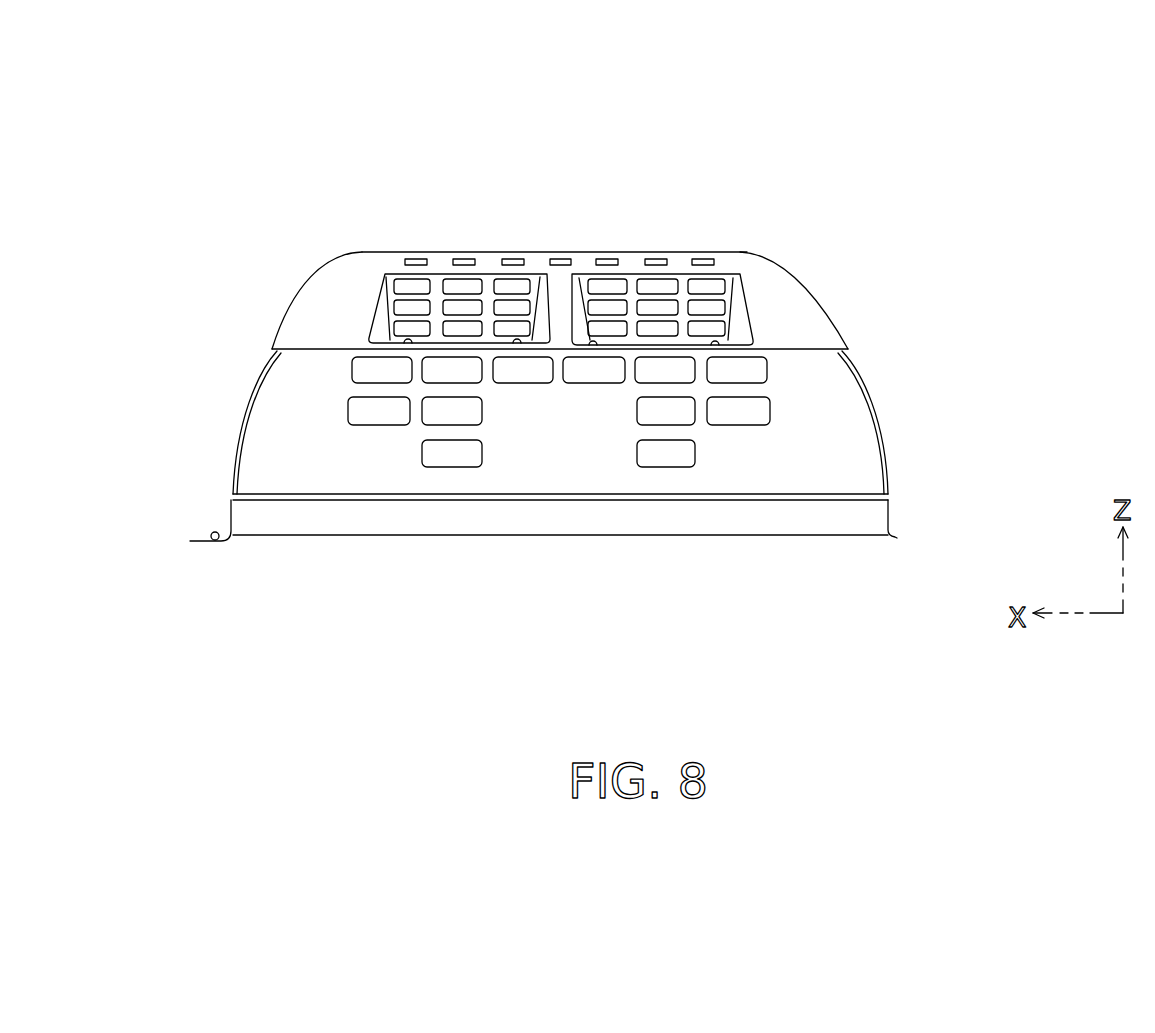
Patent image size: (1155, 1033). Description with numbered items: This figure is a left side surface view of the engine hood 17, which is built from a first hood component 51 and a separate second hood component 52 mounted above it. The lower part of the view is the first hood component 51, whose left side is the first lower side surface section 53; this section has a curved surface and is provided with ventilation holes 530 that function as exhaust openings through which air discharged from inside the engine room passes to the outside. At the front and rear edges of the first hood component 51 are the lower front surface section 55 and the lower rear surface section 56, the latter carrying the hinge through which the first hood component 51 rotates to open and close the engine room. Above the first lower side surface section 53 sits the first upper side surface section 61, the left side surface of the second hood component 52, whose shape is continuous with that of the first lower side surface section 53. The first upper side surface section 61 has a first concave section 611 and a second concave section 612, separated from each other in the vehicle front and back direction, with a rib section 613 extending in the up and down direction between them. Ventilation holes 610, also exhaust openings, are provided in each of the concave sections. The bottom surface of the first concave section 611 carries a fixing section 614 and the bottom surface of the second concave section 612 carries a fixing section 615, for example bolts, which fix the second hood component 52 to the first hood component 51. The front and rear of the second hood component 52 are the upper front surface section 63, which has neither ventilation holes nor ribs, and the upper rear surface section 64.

The engine hood 17 is at (295, 177).
The first hood component 51 is at (903, 438).
The second hood component 52 is at (843, 293).
The first lower side surface section 53 is at (553, 467).
The lower front surface section 55 is at (235, 442).
The lower rear surface section 56 is at (875, 402).
The first upper side surface section 61 is at (332, 288).
The upper front surface section 63 is at (285, 322).
The upper rear surface section 64 is at (802, 277).
The ventilation holes 530 is at (455, 452).
The ventilation holes 610 is at (458, 292).
The first concave section 611 is at (748, 303).
The second concave section 612 is at (377, 292).
The rib section 613 is at (558, 293).
The fixing section 614 is at (596, 340).
The fixing section 615 is at (517, 342).